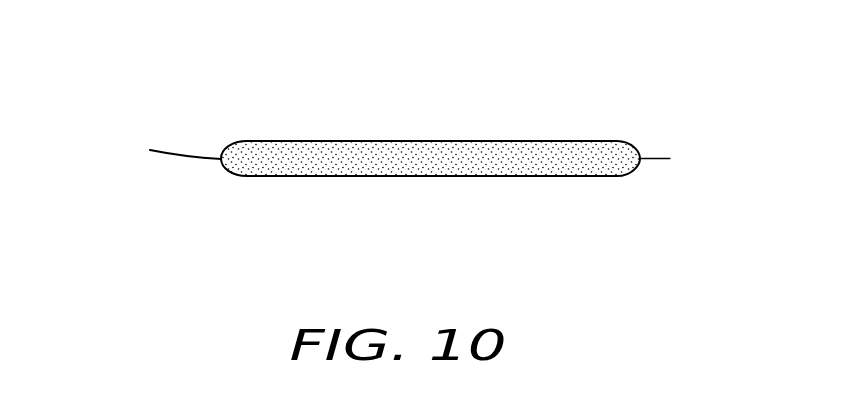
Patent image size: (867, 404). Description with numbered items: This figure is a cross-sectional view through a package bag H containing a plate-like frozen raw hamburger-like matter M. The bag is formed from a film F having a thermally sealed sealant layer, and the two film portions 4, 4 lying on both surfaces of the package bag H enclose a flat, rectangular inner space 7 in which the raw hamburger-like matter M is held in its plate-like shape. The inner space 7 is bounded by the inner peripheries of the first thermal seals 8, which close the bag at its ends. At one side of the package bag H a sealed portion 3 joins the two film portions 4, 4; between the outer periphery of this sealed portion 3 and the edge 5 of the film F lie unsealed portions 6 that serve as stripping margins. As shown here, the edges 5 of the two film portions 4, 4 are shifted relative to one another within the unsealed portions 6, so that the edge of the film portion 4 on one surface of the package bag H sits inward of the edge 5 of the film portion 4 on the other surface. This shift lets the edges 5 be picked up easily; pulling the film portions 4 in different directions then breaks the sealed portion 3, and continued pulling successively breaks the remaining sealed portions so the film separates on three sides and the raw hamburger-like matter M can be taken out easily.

The package bag H is at (581, 82).
The inner space 7 is at (462, 150).
The raw hamburger-like matter M is at (440, 155).
The film F is at (408, 140).
The film portions 4 is at (353, 140).
The sealed portion 3 is at (657, 158).
The first thermal seal 8 is at (657, 158).
The unsealed portion 6 is at (160, 153).
The edge 5 is at (145, 147).